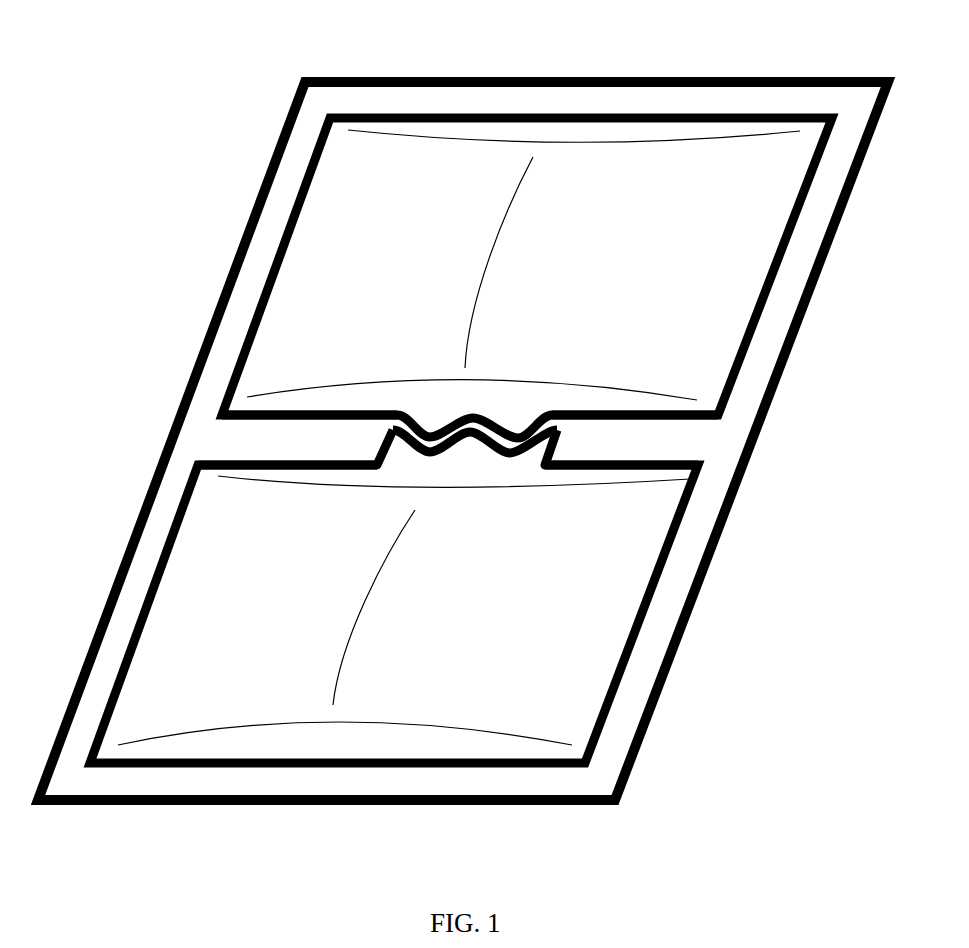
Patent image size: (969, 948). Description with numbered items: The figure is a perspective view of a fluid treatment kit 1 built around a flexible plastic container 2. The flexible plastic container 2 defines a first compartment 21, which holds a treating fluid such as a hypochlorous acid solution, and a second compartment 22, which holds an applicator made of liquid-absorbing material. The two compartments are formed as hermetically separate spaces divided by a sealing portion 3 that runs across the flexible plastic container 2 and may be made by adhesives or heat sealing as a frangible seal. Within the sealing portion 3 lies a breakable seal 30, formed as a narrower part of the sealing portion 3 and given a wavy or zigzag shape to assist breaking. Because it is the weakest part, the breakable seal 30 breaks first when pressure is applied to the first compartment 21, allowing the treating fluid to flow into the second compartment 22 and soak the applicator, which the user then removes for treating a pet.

The fluid treatment kit 1 is at (229, 75).
The flexible plastic container 2 is at (555, 98).
The first compartment 21 is at (307, 303).
The second compartment 22 is at (213, 555).
The sealing portion 3 is at (262, 447).
The breakable seal 30 is at (513, 445).